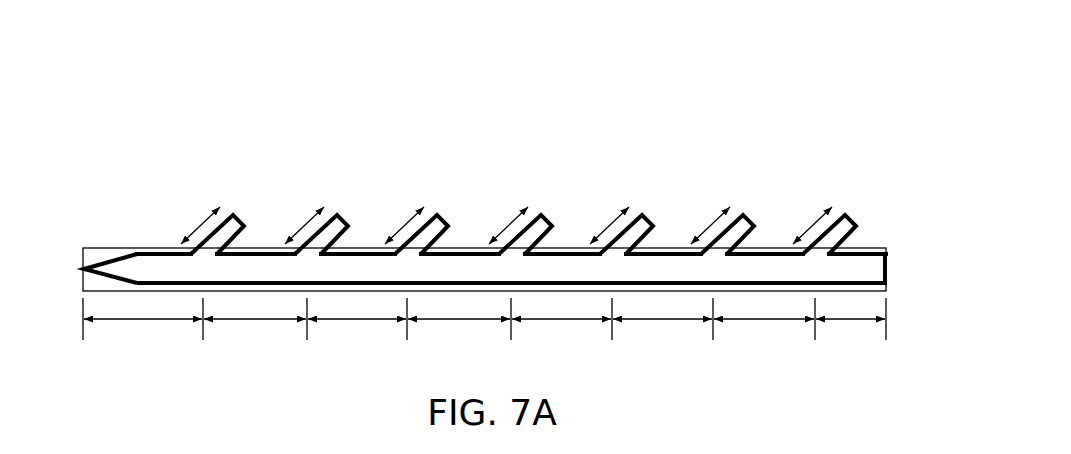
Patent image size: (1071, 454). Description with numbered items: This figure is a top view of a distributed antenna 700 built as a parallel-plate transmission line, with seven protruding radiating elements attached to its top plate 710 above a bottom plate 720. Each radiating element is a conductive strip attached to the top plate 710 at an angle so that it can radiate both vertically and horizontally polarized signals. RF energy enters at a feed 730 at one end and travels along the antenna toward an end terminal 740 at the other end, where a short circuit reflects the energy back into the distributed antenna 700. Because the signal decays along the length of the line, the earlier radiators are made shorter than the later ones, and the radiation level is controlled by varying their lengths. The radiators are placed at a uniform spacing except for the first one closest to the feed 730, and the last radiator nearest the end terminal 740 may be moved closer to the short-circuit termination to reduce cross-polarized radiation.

The distributed antenna 700 is at (195, 115).
The top plate 710 is at (155, 265).
The bottom plate 720 is at (98, 254).
The feed 730 is at (84, 271).
The end terminal 740 is at (887, 270).